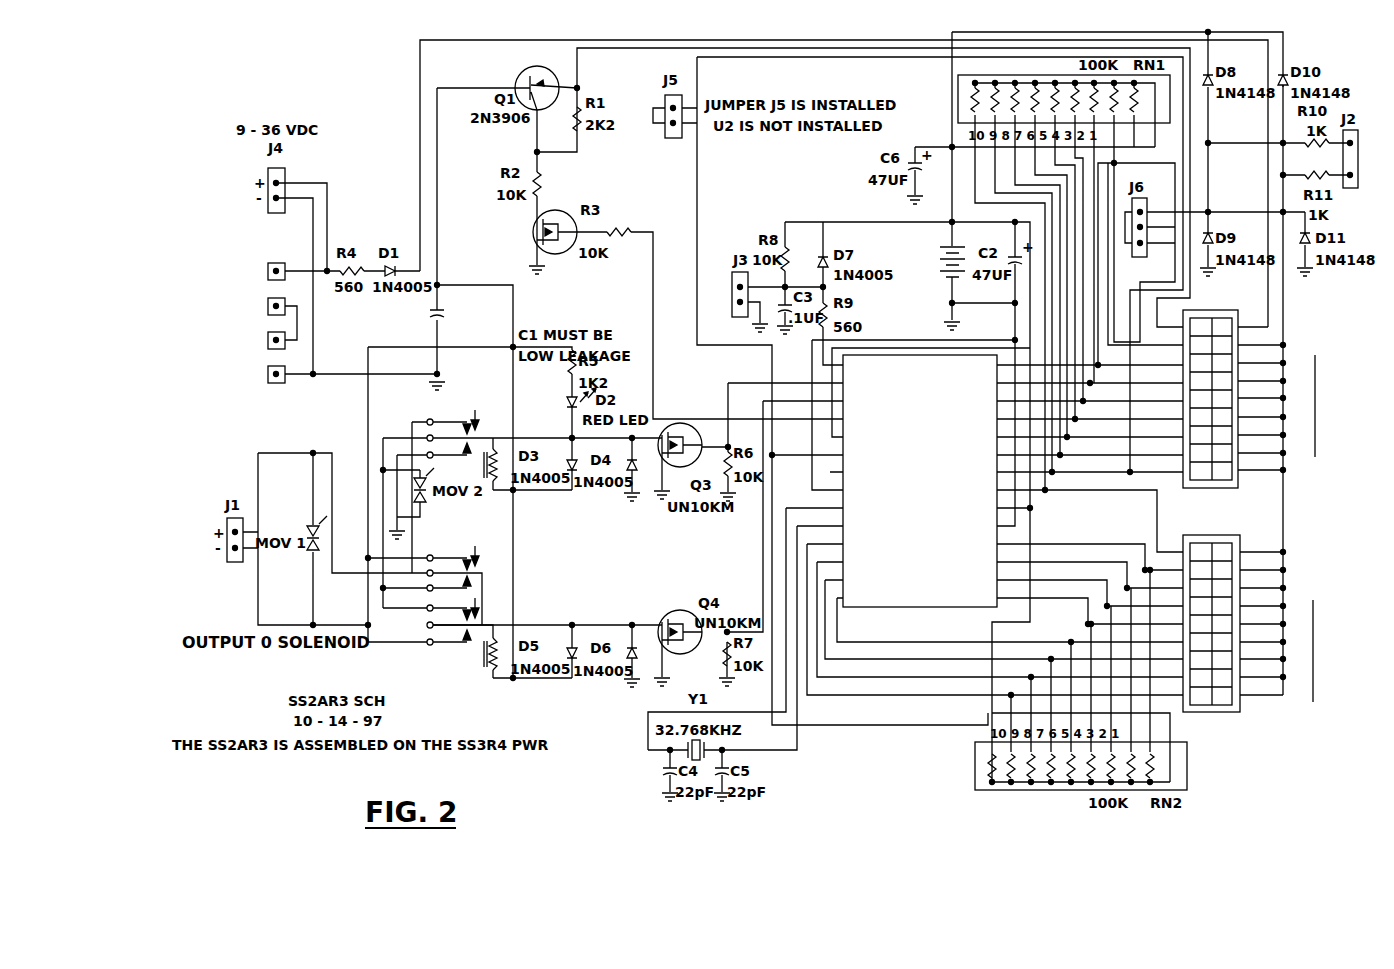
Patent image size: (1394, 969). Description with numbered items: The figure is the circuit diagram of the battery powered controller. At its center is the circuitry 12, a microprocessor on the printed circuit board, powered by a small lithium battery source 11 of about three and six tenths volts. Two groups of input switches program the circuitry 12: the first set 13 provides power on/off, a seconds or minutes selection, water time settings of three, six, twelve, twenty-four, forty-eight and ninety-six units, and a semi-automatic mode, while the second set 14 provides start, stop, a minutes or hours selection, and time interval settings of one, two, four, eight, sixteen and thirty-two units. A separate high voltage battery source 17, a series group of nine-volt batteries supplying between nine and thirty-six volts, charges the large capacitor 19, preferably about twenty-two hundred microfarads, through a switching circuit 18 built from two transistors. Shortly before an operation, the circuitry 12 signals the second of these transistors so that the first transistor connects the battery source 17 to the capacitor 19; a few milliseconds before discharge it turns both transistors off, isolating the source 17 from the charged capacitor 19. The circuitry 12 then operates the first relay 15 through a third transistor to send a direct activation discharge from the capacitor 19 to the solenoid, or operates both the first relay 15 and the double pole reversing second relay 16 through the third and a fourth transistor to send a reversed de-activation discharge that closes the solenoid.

The lithium battery source 11 is at (941, 276).
The circuitry 12 is at (920, 494).
The first set of input switches 13 is at (1238, 488).
The second set of input switches 14 is at (1235, 540).
The first relay 15 is at (451, 448).
The second relay 16 is at (473, 612).
The high voltage battery source 17 is at (248, 323).
The switching circuit 18 is at (545, 252).
The large capacitor 19 is at (429, 239).